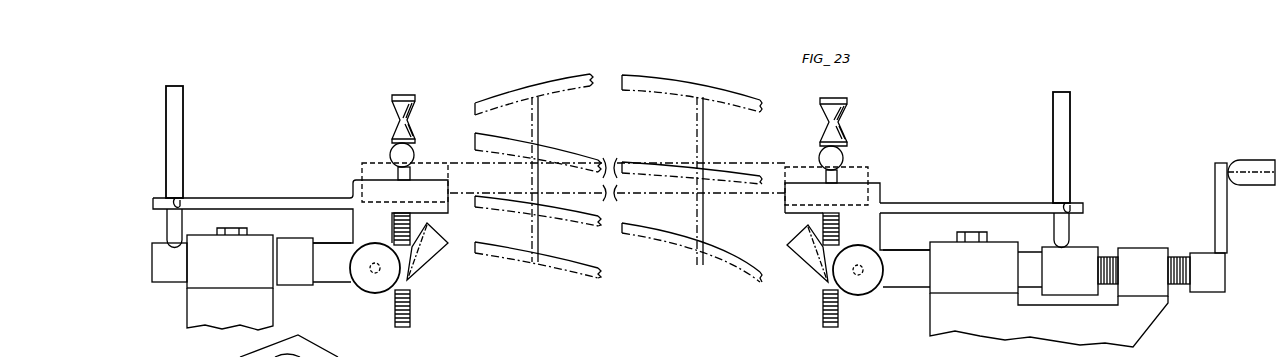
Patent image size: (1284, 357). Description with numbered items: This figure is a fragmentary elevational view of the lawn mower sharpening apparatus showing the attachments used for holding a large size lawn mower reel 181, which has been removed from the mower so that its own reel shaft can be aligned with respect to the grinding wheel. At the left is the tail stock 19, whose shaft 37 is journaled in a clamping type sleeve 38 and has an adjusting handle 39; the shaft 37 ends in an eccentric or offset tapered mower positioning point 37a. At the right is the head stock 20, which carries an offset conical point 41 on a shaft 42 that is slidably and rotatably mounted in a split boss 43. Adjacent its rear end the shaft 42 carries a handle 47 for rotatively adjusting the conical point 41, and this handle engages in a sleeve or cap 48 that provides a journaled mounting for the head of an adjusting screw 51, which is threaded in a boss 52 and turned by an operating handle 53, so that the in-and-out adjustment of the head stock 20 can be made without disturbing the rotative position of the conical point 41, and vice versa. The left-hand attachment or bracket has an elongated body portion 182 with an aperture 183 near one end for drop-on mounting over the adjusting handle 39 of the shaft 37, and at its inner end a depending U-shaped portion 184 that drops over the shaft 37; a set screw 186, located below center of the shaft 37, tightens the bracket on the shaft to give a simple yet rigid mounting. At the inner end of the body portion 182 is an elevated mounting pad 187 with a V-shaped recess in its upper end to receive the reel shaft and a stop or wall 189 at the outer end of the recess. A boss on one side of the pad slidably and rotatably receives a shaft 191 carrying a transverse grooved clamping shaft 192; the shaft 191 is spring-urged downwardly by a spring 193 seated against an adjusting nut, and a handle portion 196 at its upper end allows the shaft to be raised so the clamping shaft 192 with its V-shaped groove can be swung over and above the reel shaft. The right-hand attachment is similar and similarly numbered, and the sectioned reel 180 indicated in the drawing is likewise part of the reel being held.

The tail stock 19 is at (186, 297).
The head stock 20 is at (1166, 318).
The shaft 37 is at (332, 270).
The tapered mower positioning point 37a is at (443, 235).
The clamping type sleeve 38 is at (253, 277).
The adjusting handle 39 is at (166, 140).
The conical point 41 is at (787, 250).
The shaft 42 is at (897, 280).
The split boss 43 is at (957, 277).
The handle 47 is at (1063, 160).
The sleeve or cap 48 is at (1088, 254).
The adjusting screw 51 is at (1180, 257).
The boss 52 is at (1133, 256).
The operating handle 53 is at (1213, 277).
The right rail section 180 is at (752, 168).
The lawn mower reel 181 is at (558, 80).
The body portion 182 is at (226, 202).
The aperture 183 is at (178, 198).
The U-shaped portion 184 is at (880, 245).
The set screw 186 is at (375, 290).
The mounting pad 187 is at (375, 197).
The stop or wall 189 is at (355, 188).
The shaft 191 is at (410, 318).
The clamping shaft 192 is at (406, 154).
The spring 193 is at (412, 216).
The handle portion 196 is at (400, 100).